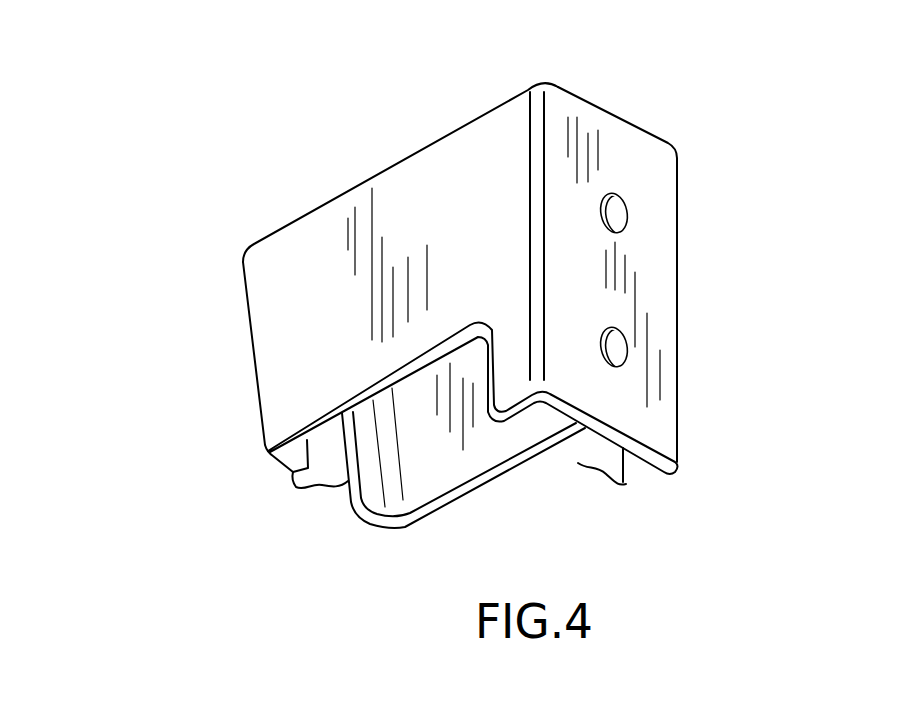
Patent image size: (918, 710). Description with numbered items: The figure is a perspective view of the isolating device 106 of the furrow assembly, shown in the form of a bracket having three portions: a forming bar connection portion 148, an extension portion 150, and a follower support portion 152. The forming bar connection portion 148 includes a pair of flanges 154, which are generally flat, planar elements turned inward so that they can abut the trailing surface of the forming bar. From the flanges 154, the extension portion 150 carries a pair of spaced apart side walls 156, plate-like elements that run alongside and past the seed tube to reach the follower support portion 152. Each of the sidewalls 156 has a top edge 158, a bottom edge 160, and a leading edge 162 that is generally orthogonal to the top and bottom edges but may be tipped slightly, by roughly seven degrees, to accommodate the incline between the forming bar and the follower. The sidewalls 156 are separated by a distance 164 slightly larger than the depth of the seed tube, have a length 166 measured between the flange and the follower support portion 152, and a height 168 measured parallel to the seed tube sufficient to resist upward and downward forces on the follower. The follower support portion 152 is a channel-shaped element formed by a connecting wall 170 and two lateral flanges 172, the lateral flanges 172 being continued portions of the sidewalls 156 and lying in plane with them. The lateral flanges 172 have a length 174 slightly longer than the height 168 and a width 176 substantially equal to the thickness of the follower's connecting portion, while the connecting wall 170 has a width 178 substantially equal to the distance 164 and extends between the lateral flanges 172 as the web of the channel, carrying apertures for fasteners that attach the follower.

The isolating device 106 is at (157, 422).
The forming bar connection portion 148 is at (356, 533).
The extension portion 150 is at (230, 173).
The follower support portion 152 is at (683, 97).
The flanges 154 is at (294, 489).
The side walls 156 is at (243, 283).
The top edge 158 is at (430, 143).
The bottom edge 160 is at (530, 457).
The leading edge 162 is at (243, 337).
The distance 164 is at (403, 530).
The length 166 is at (543, 77).
The height 168 is at (215, 270).
The connecting wall 170 is at (667, 305).
The lateral flanges 172 is at (530, 403).
The length 174 is at (685, 465).
The width 176 is at (587, 533).
The width 178 is at (770, 117).